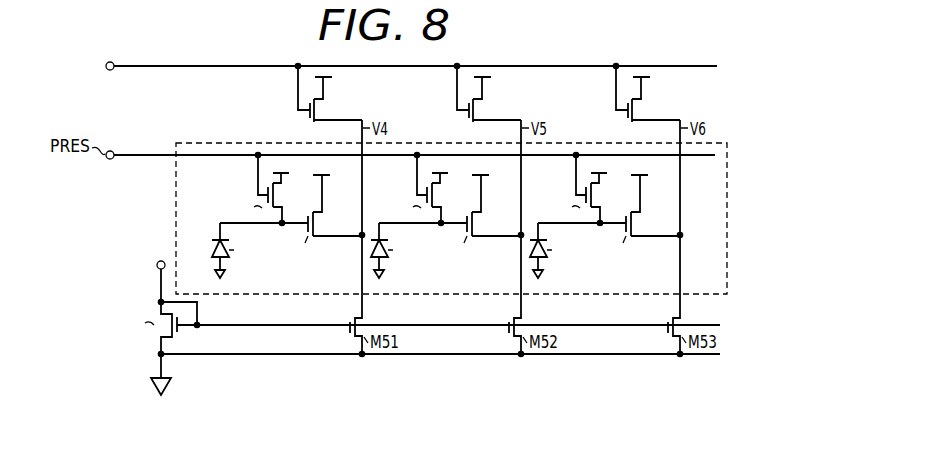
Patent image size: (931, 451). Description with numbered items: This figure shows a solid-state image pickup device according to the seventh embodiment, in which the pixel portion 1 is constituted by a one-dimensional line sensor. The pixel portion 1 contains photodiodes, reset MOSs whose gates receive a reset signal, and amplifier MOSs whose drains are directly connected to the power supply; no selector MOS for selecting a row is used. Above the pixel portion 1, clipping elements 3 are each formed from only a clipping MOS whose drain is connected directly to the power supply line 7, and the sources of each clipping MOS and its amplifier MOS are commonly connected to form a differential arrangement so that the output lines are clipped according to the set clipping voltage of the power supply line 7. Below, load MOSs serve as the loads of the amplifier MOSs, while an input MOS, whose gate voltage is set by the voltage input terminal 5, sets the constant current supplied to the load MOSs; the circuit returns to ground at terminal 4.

The power supply line 7 is at (106, 64).
The clipping element 3 is at (276, 112).
The pixel portion 1 is at (231, 141).
The voltage input terminal 5 is at (157, 263).
The ground terminal 4 is at (157, 385).